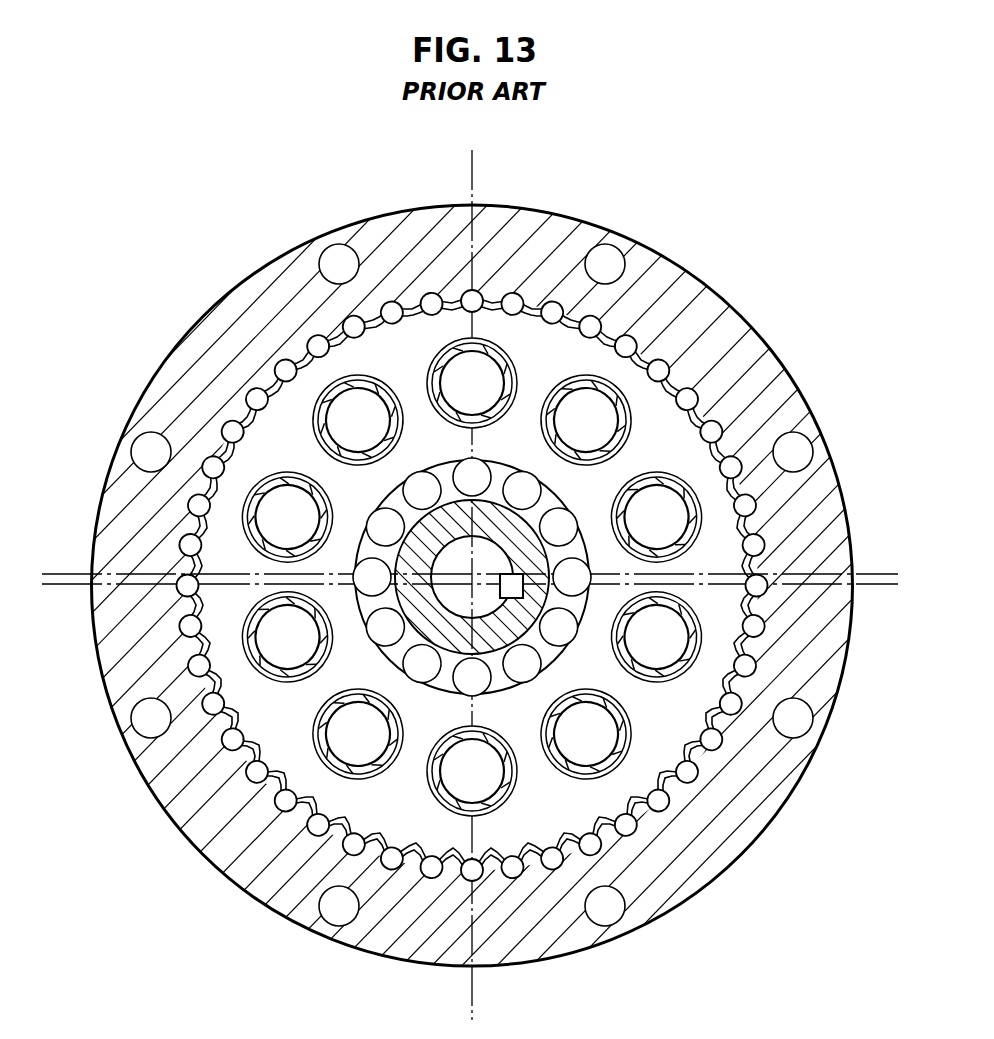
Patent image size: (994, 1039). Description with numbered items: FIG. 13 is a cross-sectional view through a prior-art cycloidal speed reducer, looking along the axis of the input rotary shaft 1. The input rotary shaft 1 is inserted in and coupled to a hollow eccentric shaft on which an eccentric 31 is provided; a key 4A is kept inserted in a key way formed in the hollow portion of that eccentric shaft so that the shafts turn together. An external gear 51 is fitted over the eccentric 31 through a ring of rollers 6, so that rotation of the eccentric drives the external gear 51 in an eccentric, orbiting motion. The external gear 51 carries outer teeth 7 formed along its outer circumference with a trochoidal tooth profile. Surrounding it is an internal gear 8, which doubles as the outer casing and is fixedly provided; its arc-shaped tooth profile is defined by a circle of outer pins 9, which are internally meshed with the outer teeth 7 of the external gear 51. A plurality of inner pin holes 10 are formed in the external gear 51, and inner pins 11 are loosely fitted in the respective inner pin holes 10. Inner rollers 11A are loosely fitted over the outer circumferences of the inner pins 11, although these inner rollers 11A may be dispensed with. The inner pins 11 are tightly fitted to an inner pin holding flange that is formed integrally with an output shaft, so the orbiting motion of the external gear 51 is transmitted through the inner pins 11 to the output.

The input rotary shaft 1 is at (460, 612).
The eccentric 31 is at (483, 514).
The key 4A is at (538, 622).
The external gear 51 is at (292, 428).
The rollers 6 is at (563, 525).
The outer teeth 7 is at (692, 318).
The internal gear 8 is at (521, 207).
The outer pins 9 is at (393, 310).
The inner pin holes 10 is at (651, 476).
The inner pins 11 is at (670, 647).
The inner rollers 11A is at (662, 682).